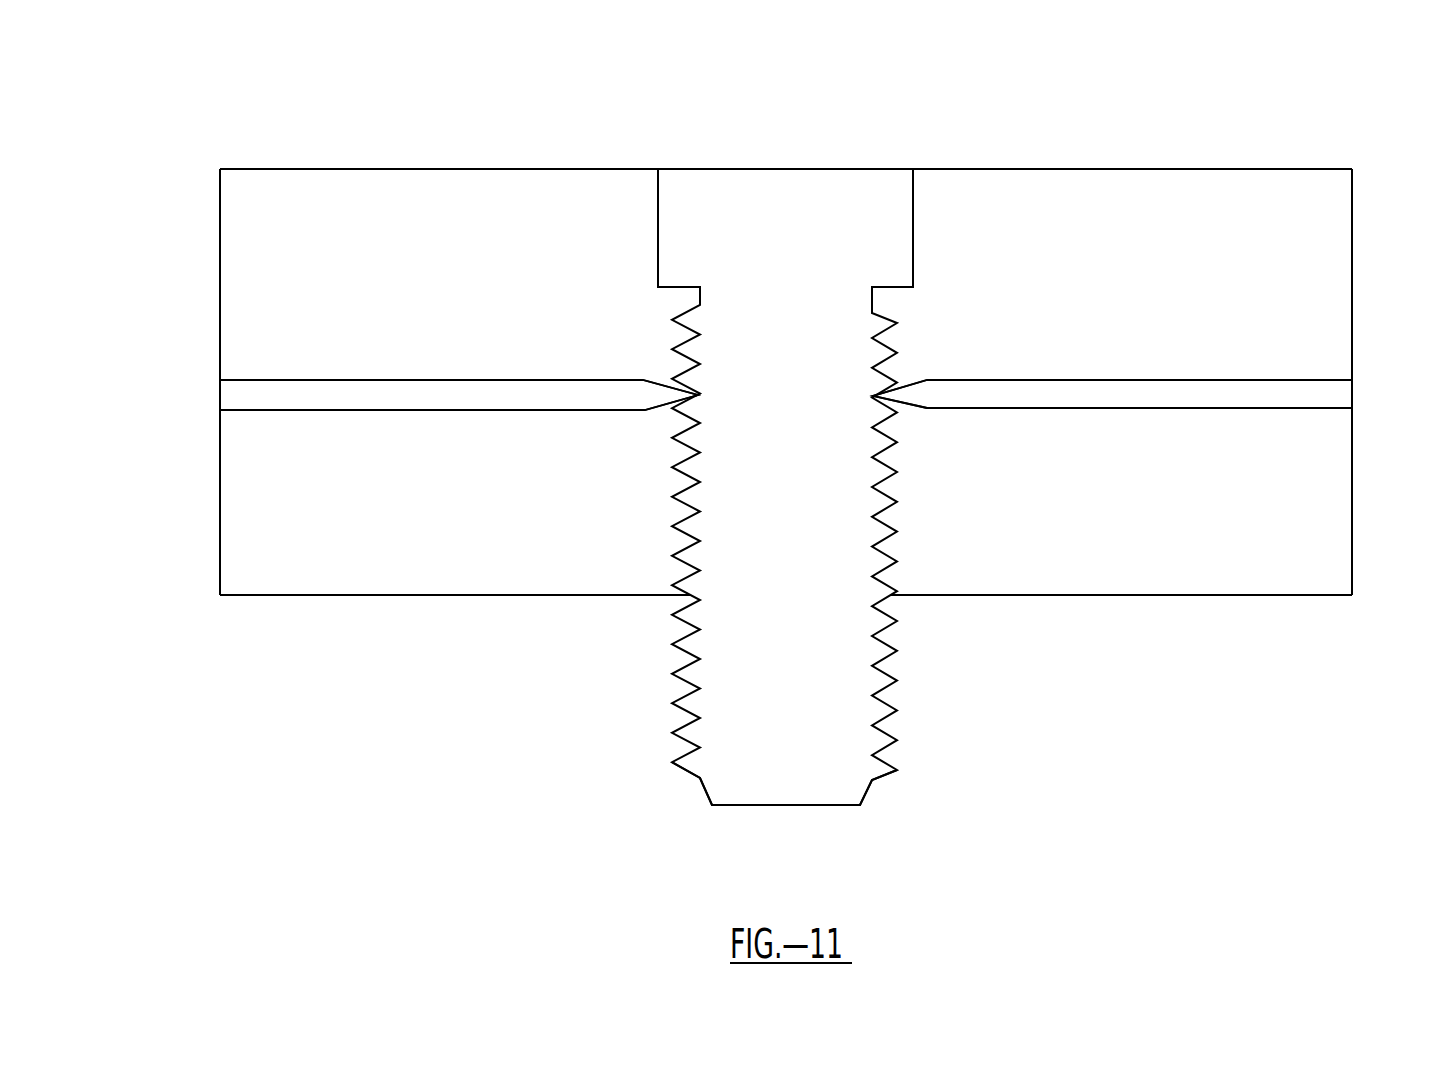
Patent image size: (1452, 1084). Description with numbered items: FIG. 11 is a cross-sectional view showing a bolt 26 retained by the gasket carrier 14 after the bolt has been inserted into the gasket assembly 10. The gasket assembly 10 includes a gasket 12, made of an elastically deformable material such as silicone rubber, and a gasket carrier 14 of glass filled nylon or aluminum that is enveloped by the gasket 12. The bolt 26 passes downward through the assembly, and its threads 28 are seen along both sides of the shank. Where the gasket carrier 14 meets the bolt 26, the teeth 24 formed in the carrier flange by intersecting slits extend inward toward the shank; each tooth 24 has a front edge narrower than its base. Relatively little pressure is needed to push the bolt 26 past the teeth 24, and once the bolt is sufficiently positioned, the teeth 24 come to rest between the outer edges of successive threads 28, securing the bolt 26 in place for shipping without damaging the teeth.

The gasket assembly 10 is at (232, 138).
The gasket 12 is at (1295, 275).
The gasket carrier 14 is at (1333, 395).
The teeth 24 is at (668, 395).
The bolt 26 is at (858, 776).
The threads 28 is at (880, 323).